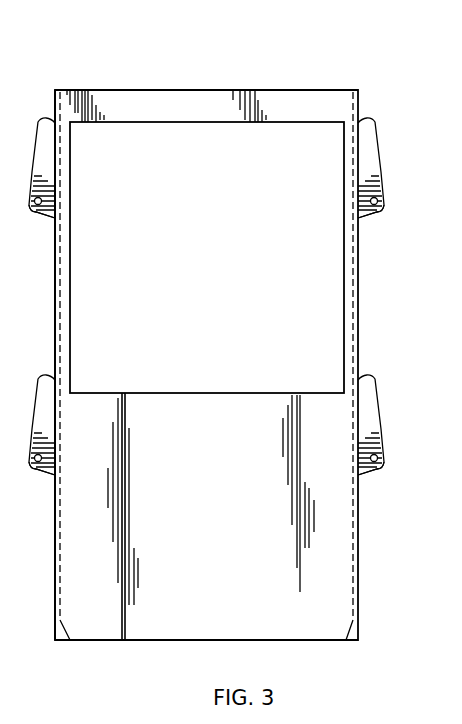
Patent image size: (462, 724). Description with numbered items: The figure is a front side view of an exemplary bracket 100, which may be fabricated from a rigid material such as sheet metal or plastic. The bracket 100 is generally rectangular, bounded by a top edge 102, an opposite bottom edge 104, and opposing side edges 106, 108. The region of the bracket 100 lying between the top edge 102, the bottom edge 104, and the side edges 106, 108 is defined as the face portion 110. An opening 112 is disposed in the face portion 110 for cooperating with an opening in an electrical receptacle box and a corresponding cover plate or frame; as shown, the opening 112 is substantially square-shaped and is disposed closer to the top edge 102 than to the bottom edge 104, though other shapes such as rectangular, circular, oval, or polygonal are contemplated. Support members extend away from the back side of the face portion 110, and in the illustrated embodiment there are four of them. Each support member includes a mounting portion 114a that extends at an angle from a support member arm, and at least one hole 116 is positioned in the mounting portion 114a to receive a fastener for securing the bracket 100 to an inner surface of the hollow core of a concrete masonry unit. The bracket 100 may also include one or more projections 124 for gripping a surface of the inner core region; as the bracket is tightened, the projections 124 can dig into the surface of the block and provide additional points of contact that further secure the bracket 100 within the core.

The bracket 100 is at (143, 52).
The top edge 102 is at (213, 90).
The bottom edge 104 is at (150, 642).
The side edge 106 is at (55, 330).
The side edge 108 is at (358, 338).
The face portion 110 is at (210, 450).
The opening 112 is at (347, 252).
The mounting portion 114a is at (48, 174).
The hole 116 is at (40, 215).
The projection 124 is at (53, 642).